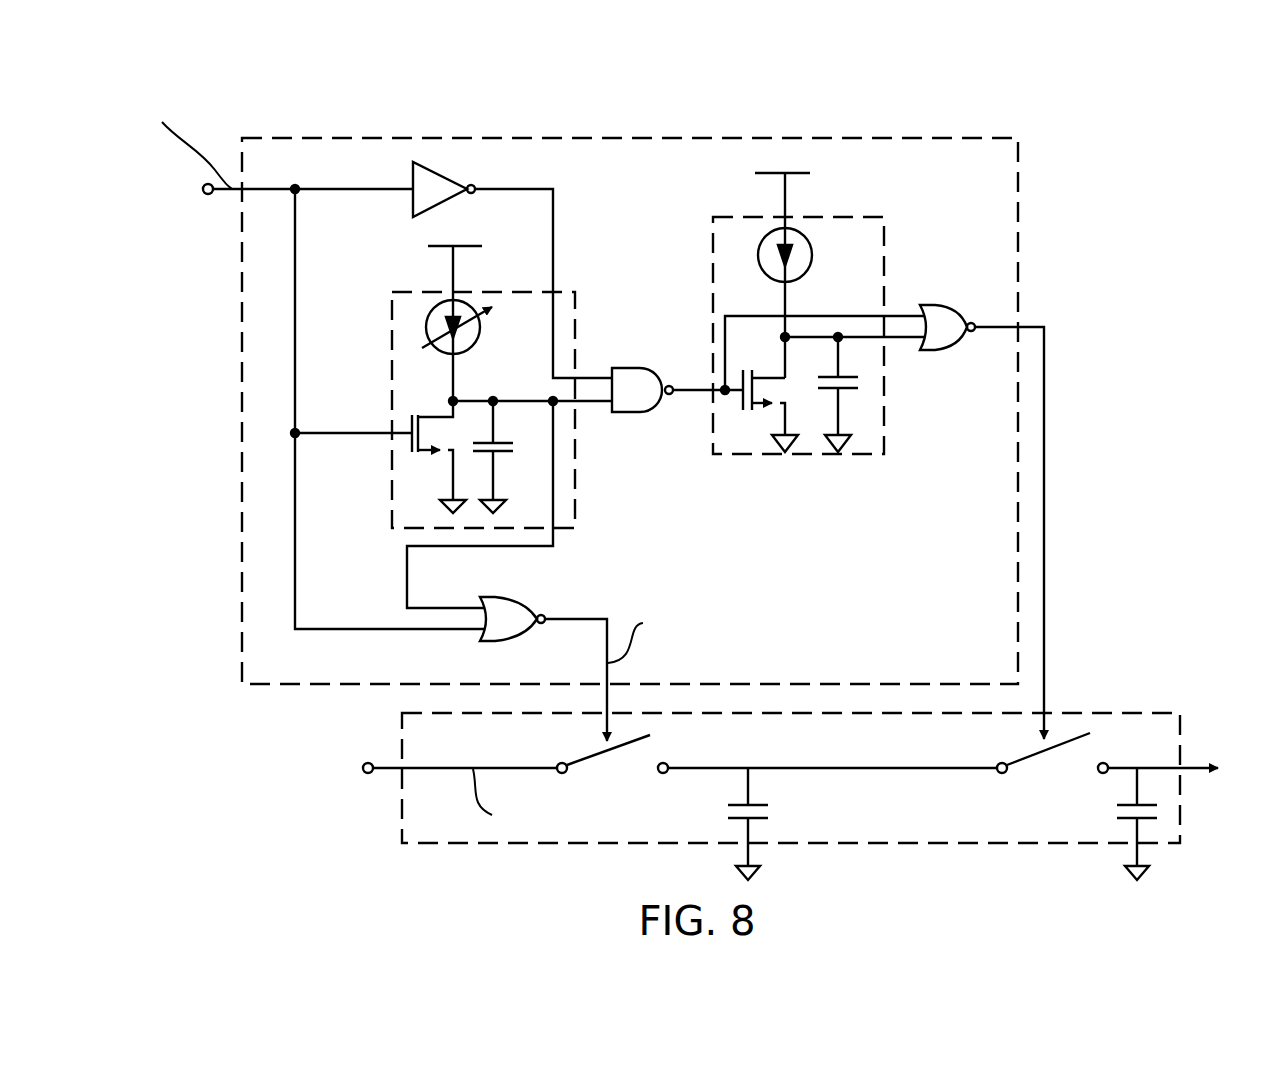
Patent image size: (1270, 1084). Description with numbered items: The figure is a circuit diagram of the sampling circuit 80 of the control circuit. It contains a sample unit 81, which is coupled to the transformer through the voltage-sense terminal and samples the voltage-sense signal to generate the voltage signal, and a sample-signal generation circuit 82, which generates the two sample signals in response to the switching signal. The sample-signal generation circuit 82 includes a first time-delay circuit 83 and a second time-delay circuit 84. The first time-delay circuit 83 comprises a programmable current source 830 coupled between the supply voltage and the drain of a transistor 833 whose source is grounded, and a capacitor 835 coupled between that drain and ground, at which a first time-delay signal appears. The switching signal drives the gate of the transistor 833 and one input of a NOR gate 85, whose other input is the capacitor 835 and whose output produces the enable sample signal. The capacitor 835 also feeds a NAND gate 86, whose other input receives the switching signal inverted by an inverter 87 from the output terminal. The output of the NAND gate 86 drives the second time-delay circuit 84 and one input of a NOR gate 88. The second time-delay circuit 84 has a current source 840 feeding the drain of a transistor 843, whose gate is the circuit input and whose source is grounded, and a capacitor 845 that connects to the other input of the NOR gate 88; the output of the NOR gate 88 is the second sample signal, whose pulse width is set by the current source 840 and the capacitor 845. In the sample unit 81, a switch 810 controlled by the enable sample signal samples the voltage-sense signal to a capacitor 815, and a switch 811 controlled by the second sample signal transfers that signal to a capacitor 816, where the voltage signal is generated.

The sampling circuit 80 is at (1178, 83).
The sample unit 81 is at (402, 743).
The sample-signal generation circuit 82 is at (1022, 178).
The first time-delay circuit 83 is at (390, 360).
The second time-delay circuit 84 is at (712, 252).
The NOR gate 85 is at (537, 608).
The NAND gate 86 is at (638, 368).
The inverter 87 is at (449, 172).
The NOR gate 88 is at (955, 305).
The programmable current source 830 is at (428, 318).
The transistor 833 is at (408, 441).
The capacitor 835 is at (498, 455).
The current source 840 is at (812, 252).
The transistor 843 is at (737, 397).
The capacitor 845 is at (850, 390).
The switch 810 is at (595, 755).
The switch 811 is at (1025, 757).
The capacitor 815 is at (757, 819).
The capacitor 816 is at (1125, 823).